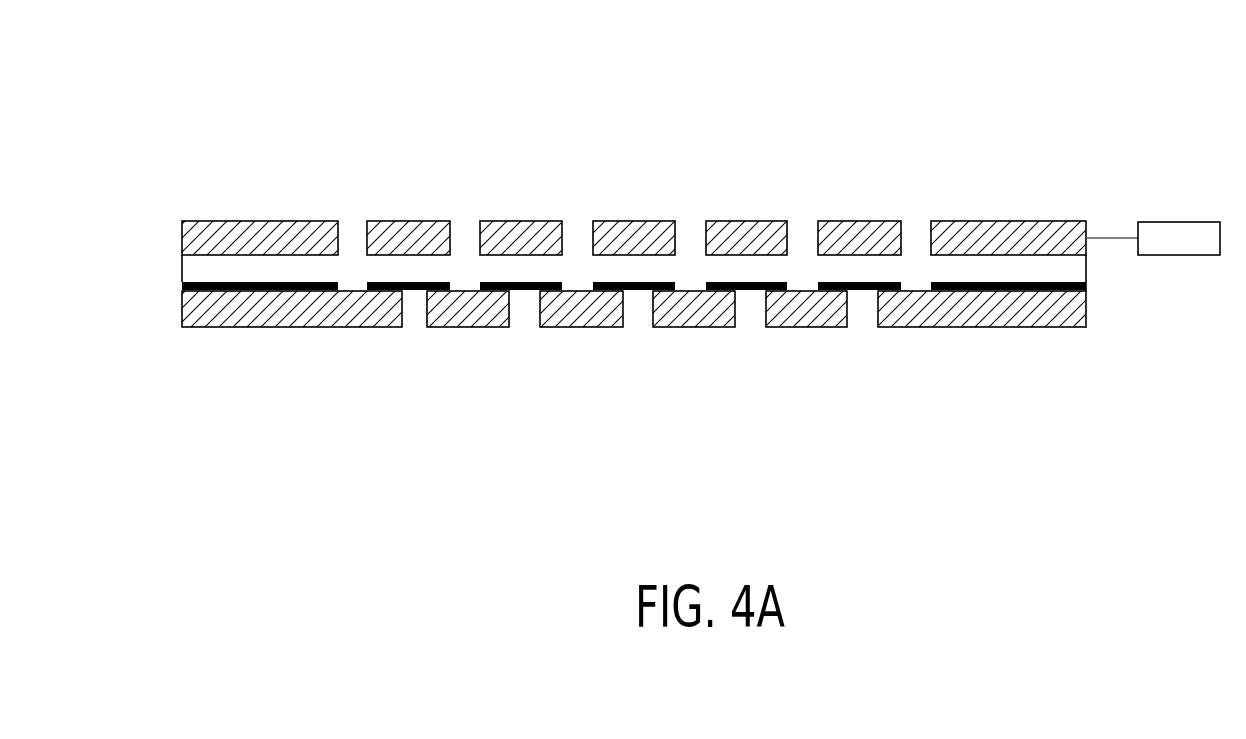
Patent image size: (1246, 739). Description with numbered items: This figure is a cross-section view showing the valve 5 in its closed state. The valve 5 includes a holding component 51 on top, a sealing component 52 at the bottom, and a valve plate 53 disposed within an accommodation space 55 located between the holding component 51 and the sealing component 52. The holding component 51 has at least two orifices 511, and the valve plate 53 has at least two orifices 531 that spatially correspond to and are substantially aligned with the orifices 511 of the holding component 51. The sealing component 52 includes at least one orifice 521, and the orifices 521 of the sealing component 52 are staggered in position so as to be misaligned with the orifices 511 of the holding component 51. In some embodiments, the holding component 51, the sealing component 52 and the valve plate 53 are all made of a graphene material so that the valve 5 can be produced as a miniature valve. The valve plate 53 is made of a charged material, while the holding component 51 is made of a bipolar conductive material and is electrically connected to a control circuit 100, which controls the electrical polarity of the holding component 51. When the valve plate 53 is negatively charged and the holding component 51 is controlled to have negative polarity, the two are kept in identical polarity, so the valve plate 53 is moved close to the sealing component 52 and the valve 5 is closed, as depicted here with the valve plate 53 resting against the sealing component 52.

The valve 5 is at (637, 219).
The holding component 51 is at (985, 233).
The orifices of the holding component 511 is at (816, 203).
The sealing component 52 is at (923, 310).
The orifice of the sealing component 521 is at (657, 342).
The valve plate 53 is at (1070, 290).
The orifices of the valve plate 531 is at (593, 262).
The accommodation space 55 is at (977, 266).
The control circuit 100 is at (1178, 220).